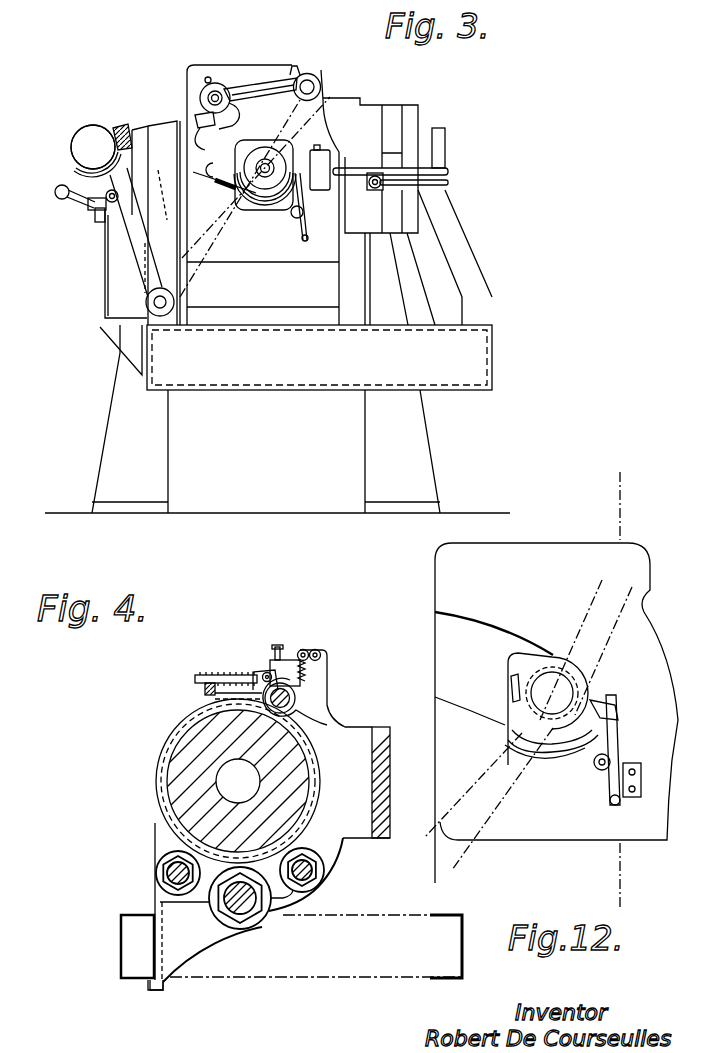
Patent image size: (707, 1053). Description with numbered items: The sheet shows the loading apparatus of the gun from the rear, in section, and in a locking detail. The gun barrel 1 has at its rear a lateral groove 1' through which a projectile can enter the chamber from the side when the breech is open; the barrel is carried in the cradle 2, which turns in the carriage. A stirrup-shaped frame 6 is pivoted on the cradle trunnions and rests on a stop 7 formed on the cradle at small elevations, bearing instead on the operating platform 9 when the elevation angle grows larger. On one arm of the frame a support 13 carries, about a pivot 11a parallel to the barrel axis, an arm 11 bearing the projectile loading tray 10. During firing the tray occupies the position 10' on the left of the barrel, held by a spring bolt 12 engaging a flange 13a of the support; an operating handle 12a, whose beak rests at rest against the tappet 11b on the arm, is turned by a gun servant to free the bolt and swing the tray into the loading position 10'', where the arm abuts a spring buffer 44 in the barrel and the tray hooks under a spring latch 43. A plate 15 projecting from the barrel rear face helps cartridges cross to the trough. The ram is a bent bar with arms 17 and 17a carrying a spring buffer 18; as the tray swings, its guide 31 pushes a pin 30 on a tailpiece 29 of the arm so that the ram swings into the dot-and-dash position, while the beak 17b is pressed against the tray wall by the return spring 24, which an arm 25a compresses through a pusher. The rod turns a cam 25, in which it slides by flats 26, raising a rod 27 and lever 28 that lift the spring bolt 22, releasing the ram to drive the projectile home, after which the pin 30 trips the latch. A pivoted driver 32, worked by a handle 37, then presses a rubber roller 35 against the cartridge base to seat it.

In FIG. 4, the gun barrel 1 is at (240, 780).
In FIG. 3, the lateral groove 1' is at (223, 169).
In FIG. 4, the cradle 2 is at (170, 736).
In FIG. 3, the frame 6 is at (482, 358).
In FIG. 4, the frame 6 is at (133, 980).
In FIG. 4, the stop 7 is at (154, 991).
In FIG. 3, the operating platform 9 is at (455, 516).
In FIG. 3, the projectile loading tray 10 is at (70, 151).
In FIG. 3, the projectile tray firing position 10' is at (87, 136).
In FIG. 12, the projectile tray loading position 10'' is at (487, 688).
In FIG. 3, the arm 11 is at (140, 254).
In FIG. 12, the arm 11 is at (634, 694).
In FIG. 3, the pivot 11a is at (150, 303).
In FIG. 3, the tappet 11b is at (104, 226).
In FIG. 3, the spring bolt 12 is at (93, 206).
In FIG. 3, the operating handle 12a is at (55, 192).
In FIG. 3, the support 13 is at (103, 320).
In FIG. 3, the flange 13a is at (92, 210).
In FIG. 3, the plate 15 is at (262, 206).
In FIG. 12, the plate 15 is at (555, 755).
In FIG. 4, the ram arm 17 is at (205, 692).
In FIG. 3, the ram arm 17a is at (260, 86).
In FIG. 12, the ram arm 17a is at (554, 688).
In FIG. 3, the beak 17b is at (205, 78).
In FIG. 3, the spring buffer 18 is at (217, 88).
In FIG. 4, the spring bolt 22 is at (288, 652).
In FIG. 4, the return spring 24 is at (223, 673).
In FIG. 4, the cam 25 is at (300, 690).
In FIG. 4, the arm 25a is at (263, 673).
In FIG. 4, the flats 26 is at (270, 707).
In FIG. 4, the rod 27 is at (320, 672).
In FIG. 4, the lever 28 is at (303, 649).
In FIG. 3, the tailpiece 29 is at (240, 113).
In FIG. 12, the tailpiece 29 is at (598, 698).
In FIG. 3, the pin 30 is at (196, 114).
In FIG. 3, the guide 31 is at (119, 127).
In FIG. 3, the driver 32 is at (336, 186).
In FIG. 3, the rubber roller 35 is at (315, 149).
In FIG. 3, the handle 37 is at (442, 150).
In FIG. 3, the spring latch 43 is at (295, 220).
In FIG. 12, the spring latch 43 is at (620, 760).
In FIG. 12, the spring buffer 44 is at (598, 770).